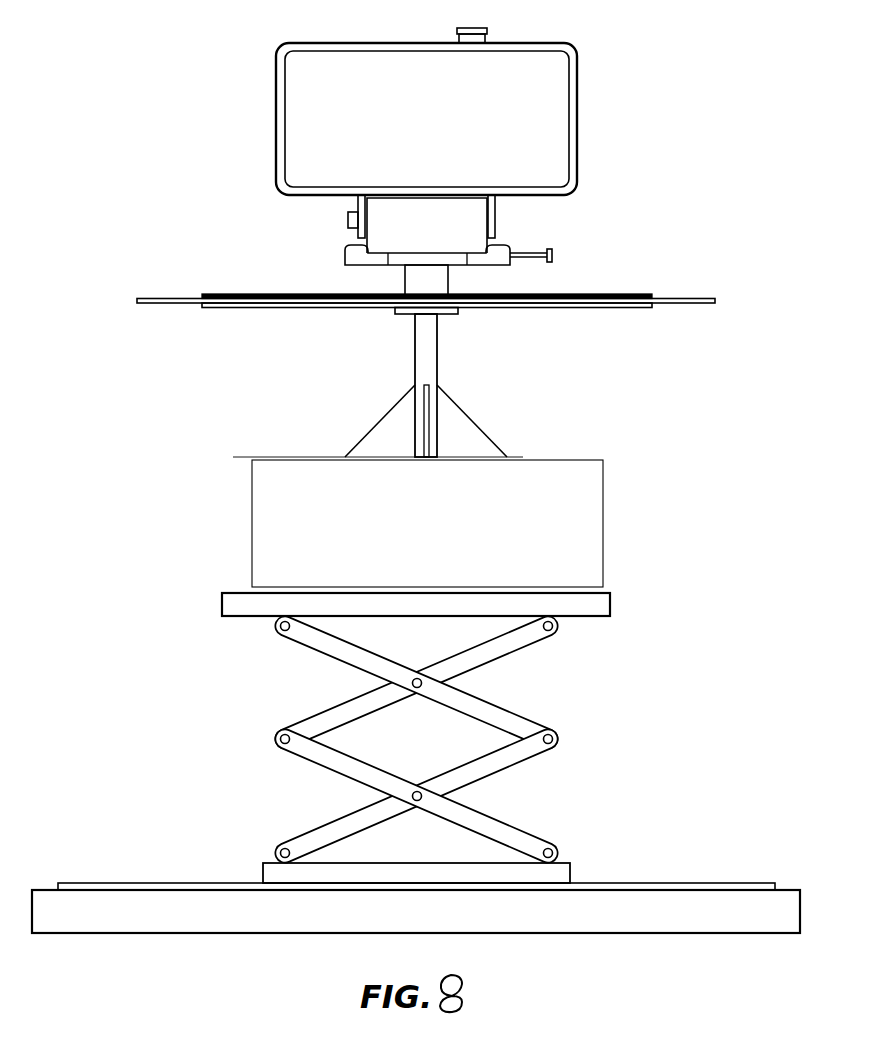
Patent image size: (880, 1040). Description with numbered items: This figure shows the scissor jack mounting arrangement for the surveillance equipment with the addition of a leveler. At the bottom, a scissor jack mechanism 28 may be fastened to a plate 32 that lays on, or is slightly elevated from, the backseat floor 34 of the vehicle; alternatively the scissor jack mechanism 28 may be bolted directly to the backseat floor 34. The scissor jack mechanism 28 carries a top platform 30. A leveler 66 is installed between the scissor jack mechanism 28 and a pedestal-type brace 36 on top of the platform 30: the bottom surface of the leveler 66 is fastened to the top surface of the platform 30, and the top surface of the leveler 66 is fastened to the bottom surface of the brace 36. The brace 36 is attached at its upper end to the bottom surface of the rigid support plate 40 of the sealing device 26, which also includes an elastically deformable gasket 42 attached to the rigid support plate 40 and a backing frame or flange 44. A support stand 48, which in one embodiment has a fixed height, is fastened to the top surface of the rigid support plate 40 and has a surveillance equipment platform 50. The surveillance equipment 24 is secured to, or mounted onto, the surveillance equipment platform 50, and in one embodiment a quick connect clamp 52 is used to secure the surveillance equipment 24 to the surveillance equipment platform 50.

The surveillance equipment 24 is at (357, 43).
The sealing device 26 is at (437, 302).
The scissor jack mechanism 28 is at (508, 712).
The top platform 30 is at (612, 608).
The plate 32 is at (612, 883).
The backseat floor 34 is at (188, 908).
The pedestal-type brace 36 is at (437, 369).
The rigid support plate 40 is at (259, 294).
The elastically deformable gasket 42 is at (155, 297).
The backing frame or flange 44 is at (288, 309).
The support stand 48 is at (450, 286).
The surveillance equipment platform 50 is at (397, 260).
The quick connect clamp 52 is at (526, 254).
The leveler 66 is at (600, 511).